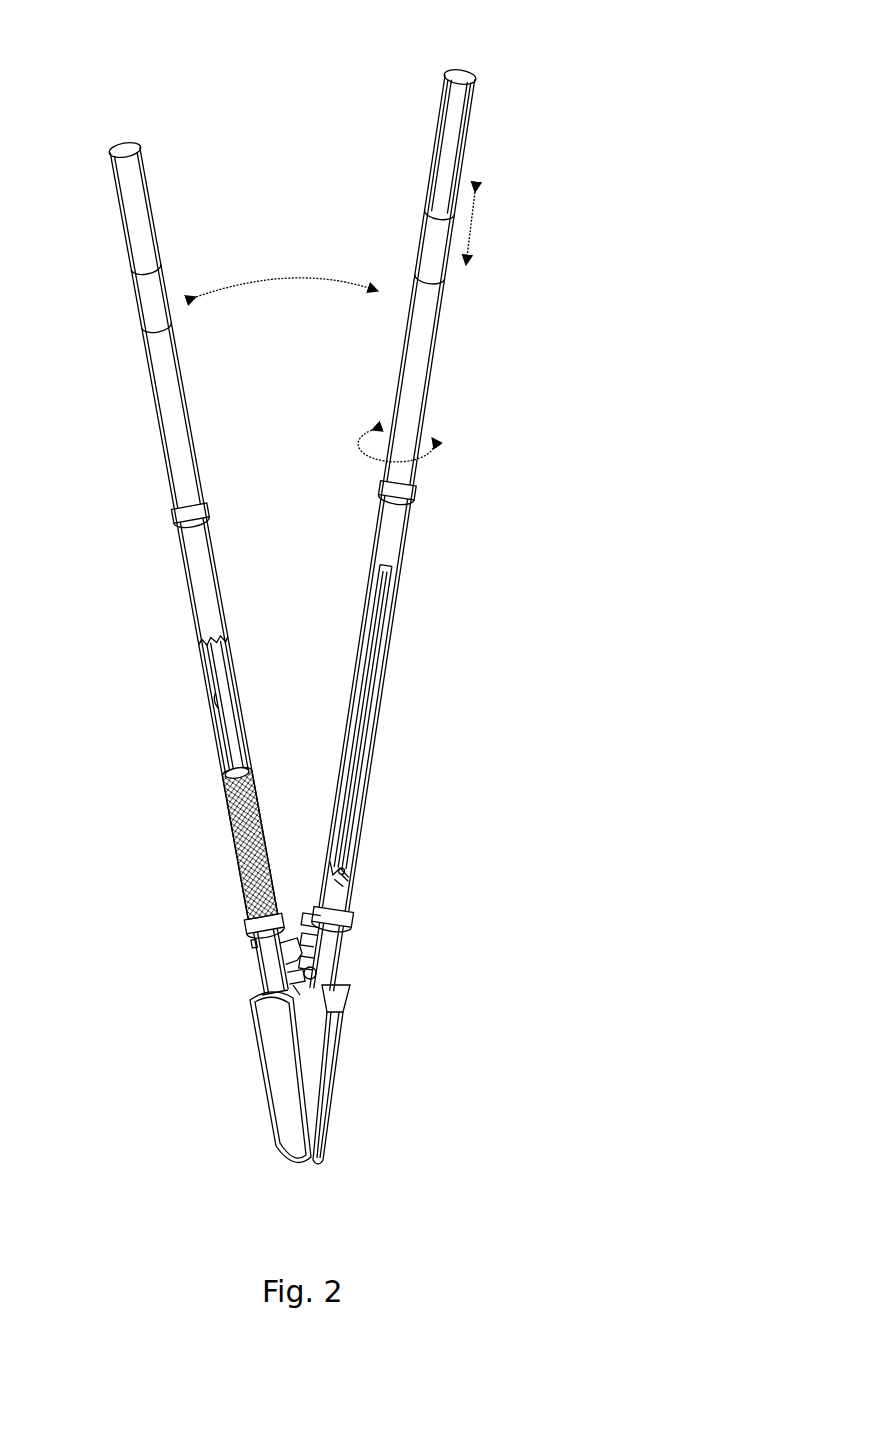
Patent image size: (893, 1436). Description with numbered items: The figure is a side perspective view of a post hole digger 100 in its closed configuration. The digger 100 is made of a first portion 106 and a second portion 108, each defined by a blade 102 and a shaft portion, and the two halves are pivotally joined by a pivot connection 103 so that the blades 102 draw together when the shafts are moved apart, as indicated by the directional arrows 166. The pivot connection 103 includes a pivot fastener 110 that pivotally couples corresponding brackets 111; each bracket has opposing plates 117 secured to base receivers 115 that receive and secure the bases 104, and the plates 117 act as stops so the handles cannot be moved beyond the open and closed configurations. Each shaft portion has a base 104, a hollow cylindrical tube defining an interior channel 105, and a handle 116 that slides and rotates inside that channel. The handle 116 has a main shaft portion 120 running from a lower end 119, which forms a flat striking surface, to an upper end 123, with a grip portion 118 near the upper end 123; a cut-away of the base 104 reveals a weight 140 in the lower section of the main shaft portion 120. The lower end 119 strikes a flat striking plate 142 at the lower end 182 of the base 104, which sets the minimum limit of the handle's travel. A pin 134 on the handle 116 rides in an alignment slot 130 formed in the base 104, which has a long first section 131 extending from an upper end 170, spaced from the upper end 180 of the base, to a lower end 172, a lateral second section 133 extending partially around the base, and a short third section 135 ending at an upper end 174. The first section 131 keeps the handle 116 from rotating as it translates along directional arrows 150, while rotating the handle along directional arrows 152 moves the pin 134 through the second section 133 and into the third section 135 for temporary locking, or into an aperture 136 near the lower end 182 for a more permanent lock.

The post hole digger 100 is at (566, 99).
The blades 102 is at (293, 1150).
The pivot connection 103 is at (236, 1119).
The base 104 is at (215, 545).
The interior channel 105 is at (210, 700).
The first portion 106 is at (148, 131).
The second portion 108 is at (486, 64).
The pivot fastener 110 is at (312, 980).
The brackets 111 is at (270, 1000).
The base receivers 115 is at (268, 955).
The handle 116 is at (184, 368).
The plates 117 is at (290, 985).
The grip portion 118 is at (157, 212).
The lower end 119 is at (256, 928).
The main shaft portion 120 is at (190, 430).
The upper end 123 is at (125, 148).
The alignment slot 130 is at (360, 718).
The first section 131 is at (355, 770).
The second section 133 is at (345, 878).
The pin 134 is at (345, 872).
The third section 135 is at (343, 870).
The aperture 136 is at (325, 880).
The weight 140 is at (240, 845).
The striking plate 142 is at (258, 920).
The directional arrows 150 is at (475, 231).
The directional arrows 152 is at (440, 450).
The directional arrows 166 is at (296, 277).
The upper end 170 is at (385, 570).
The lower end 172 is at (350, 912).
The upper end 174 is at (340, 866).
The upper end 180 is at (175, 513).
The lower end 182 is at (316, 970).